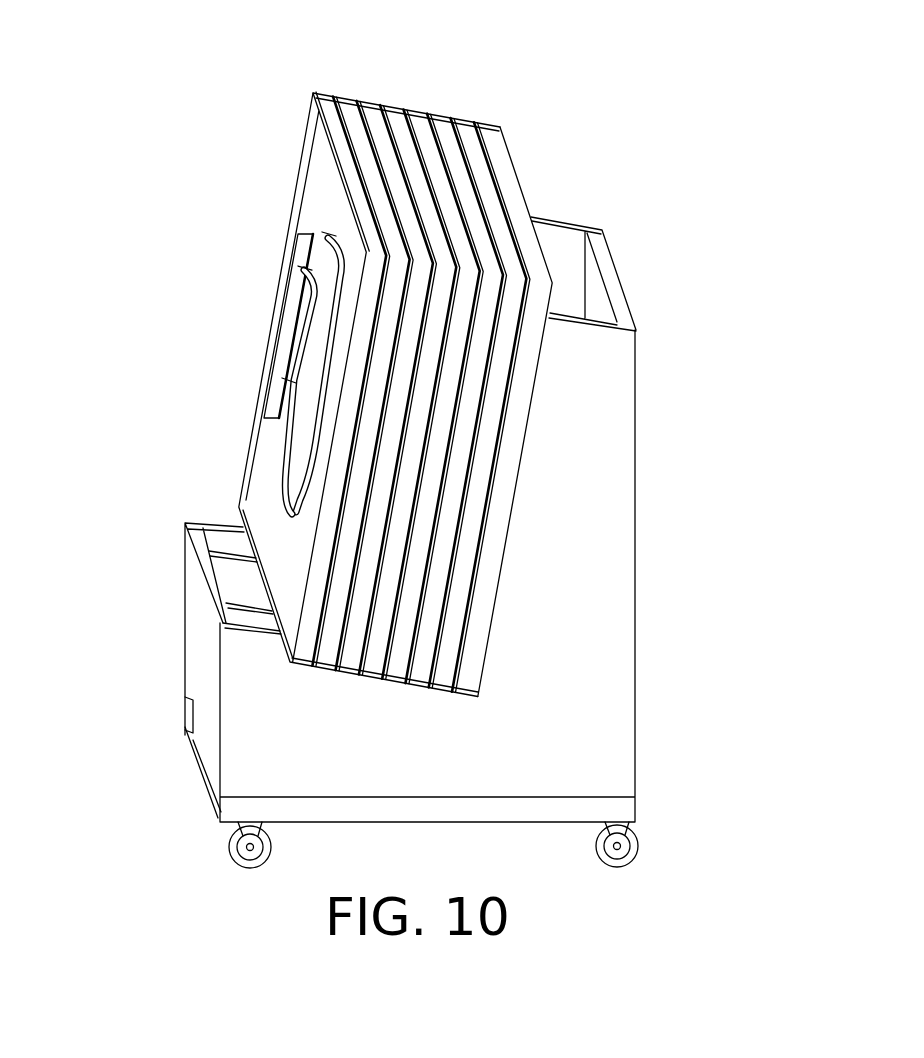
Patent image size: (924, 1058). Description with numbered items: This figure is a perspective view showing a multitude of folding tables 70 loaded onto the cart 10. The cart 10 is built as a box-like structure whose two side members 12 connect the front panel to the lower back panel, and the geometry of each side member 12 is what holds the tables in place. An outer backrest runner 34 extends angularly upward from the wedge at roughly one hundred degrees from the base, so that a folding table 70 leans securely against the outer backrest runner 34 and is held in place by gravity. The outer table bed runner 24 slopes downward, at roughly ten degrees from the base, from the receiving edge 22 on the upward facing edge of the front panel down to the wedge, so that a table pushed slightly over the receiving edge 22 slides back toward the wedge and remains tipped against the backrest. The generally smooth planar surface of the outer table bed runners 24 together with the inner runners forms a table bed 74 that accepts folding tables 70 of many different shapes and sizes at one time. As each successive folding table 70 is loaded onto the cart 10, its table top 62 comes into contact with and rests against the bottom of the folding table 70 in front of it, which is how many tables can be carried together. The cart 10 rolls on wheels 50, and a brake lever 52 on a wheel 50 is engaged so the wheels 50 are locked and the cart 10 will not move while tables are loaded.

The cart 10 is at (680, 325).
The side member 12 is at (577, 577).
The receiving edge 22 is at (205, 552).
The outer table bed runner 24 is at (276, 633).
The outer backrest runner 34 is at (523, 470).
The wheel 50 is at (635, 853).
The brake lever 52 is at (635, 830).
The table top 62 is at (403, 293).
The folding table 70 is at (292, 122).
The table bed 74 is at (200, 494).